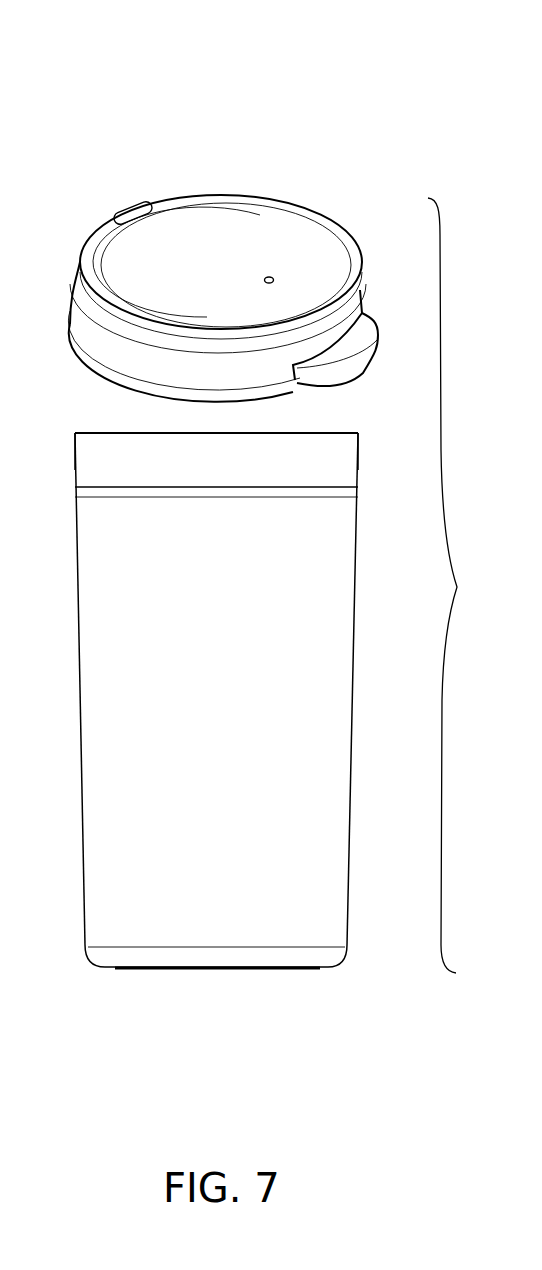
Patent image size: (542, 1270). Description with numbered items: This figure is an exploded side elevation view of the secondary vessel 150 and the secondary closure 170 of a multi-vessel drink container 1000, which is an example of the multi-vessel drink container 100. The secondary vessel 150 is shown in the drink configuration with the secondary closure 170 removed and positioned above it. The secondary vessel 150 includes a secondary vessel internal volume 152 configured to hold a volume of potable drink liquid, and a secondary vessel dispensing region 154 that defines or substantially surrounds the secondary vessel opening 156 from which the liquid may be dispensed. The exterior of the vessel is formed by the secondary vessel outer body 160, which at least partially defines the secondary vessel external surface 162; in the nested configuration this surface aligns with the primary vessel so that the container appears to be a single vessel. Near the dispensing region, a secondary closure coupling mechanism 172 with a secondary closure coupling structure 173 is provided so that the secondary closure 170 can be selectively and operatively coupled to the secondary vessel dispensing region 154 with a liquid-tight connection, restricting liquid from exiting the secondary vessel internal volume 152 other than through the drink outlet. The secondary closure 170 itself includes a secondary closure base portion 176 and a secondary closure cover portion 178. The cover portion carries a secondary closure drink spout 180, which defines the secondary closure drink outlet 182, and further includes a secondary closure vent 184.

The multi-vessel drink container 100 is at (315, 58).
The multi-vessel drink container 1000 is at (332, 94).
The secondary vessel 150 is at (221, 674).
The secondary vessel internal volume 152 is at (228, 454).
The secondary vessel dispensing region 154 is at (72, 440).
The secondary vessel opening 156 is at (98, 432).
The secondary vessel outer body 160 is at (359, 690).
The secondary vessel external surface 162 is at (353, 712).
The secondary closure 170 is at (213, 287).
The secondary closure coupling mechanism 172 is at (364, 452).
The secondary closure coupling structure 173 is at (359, 468).
The secondary closure base portion 176 is at (113, 345).
The secondary closure cover portion 178 is at (304, 252).
The secondary closure drink spout 180 is at (105, 228).
The secondary closure drink outlet 182 is at (133, 209).
The secondary closure vent 184 is at (274, 279).